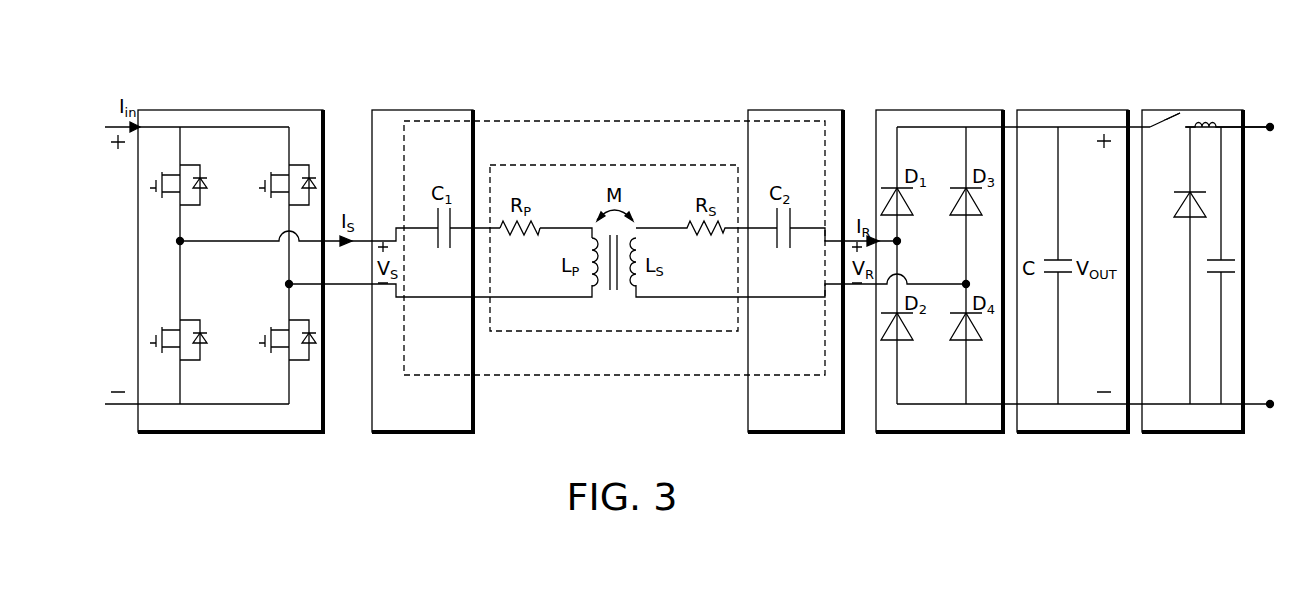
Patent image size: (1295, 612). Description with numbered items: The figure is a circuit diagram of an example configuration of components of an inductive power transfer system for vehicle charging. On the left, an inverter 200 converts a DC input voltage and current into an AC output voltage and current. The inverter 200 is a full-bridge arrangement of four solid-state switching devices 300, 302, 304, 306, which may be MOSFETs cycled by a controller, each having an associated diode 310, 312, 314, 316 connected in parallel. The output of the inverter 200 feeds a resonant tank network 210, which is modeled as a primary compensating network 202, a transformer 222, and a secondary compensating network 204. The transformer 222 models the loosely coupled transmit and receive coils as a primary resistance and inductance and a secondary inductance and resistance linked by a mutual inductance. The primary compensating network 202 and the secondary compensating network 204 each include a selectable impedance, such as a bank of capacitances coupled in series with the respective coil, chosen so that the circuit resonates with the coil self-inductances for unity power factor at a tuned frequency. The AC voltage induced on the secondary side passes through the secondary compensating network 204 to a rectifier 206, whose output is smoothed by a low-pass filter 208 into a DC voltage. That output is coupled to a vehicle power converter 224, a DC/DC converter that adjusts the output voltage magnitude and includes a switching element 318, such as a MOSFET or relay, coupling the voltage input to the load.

The inverter 200 is at (229, 108).
The primary compensating network 202 is at (421, 108).
The secondary compensating network 204 is at (796, 108).
The rectifier 206 is at (961, 108).
The low-pass filter 208 is at (1043, 108).
The resonant tank network 210 is at (621, 120).
The transformer 222 is at (621, 165).
The vehicle power converter 224 is at (1197, 108).
The solid-state switching device Q1 300 is at (162, 174).
The solid-state switching device Q2 302 is at (162, 329).
The solid-state switching device Q3 304 is at (274, 196).
The solid-state switching device Q4 306 is at (274, 352).
The diode 310 is at (205, 185).
The diode 312 is at (205, 340).
The diode 314 is at (314, 184).
The diode 316 is at (314, 339).
The switching element 318 is at (1171, 118).